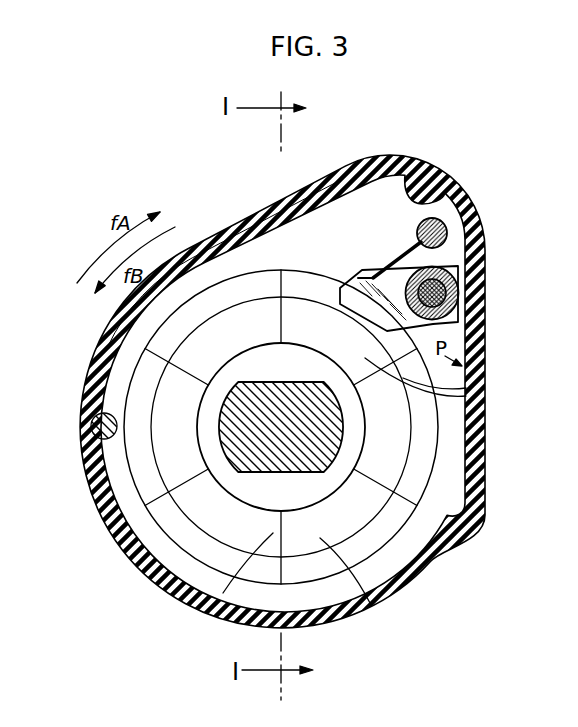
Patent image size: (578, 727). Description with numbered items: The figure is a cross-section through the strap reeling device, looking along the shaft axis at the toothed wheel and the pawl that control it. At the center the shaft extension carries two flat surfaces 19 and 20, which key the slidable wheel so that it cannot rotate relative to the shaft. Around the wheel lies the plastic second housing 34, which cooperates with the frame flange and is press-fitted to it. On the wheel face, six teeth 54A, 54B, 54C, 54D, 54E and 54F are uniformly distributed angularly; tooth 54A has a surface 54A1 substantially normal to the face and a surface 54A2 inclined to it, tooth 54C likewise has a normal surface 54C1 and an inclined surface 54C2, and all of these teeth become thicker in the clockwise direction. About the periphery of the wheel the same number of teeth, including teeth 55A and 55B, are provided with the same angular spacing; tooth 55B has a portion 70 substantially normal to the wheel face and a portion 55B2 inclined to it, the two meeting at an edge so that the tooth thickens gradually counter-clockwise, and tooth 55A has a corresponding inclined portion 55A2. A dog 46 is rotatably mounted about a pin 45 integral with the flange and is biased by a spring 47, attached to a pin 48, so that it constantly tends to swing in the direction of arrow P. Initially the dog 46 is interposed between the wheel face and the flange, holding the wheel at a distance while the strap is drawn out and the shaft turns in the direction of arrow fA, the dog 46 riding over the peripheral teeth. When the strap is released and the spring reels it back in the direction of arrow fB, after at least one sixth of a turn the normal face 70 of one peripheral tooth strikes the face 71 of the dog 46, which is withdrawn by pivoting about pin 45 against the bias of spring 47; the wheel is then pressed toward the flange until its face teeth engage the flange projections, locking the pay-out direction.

The flat surface 19 is at (290, 382).
The flat surface 20 is at (253, 472).
The second housing 34 is at (490, 397).
The pin 45 is at (433, 289).
The dog 46 is at (373, 276).
The spring 47 is at (377, 302).
The pin 48 is at (485, 240).
The tooth 54A is at (360, 350).
The tooth 54B is at (410, 437).
The tooth 54C is at (344, 531).
The tooth 54D is at (221, 509).
The tooth 54E is at (187, 422).
The tooth 54F is at (248, 346).
The surface 54A1 is at (481, 398).
The surface 54A2 is at (470, 395).
The surface 54C1 is at (223, 593).
The surface 54C2 is at (370, 603).
The tooth 55A is at (307, 283).
The inclined portion 55A2 is at (317, 284).
The tooth 55B is at (422, 451).
The portion 55B2 is at (420, 477).
The face 70 is at (230, 258).
The face 71 is at (455, 318).